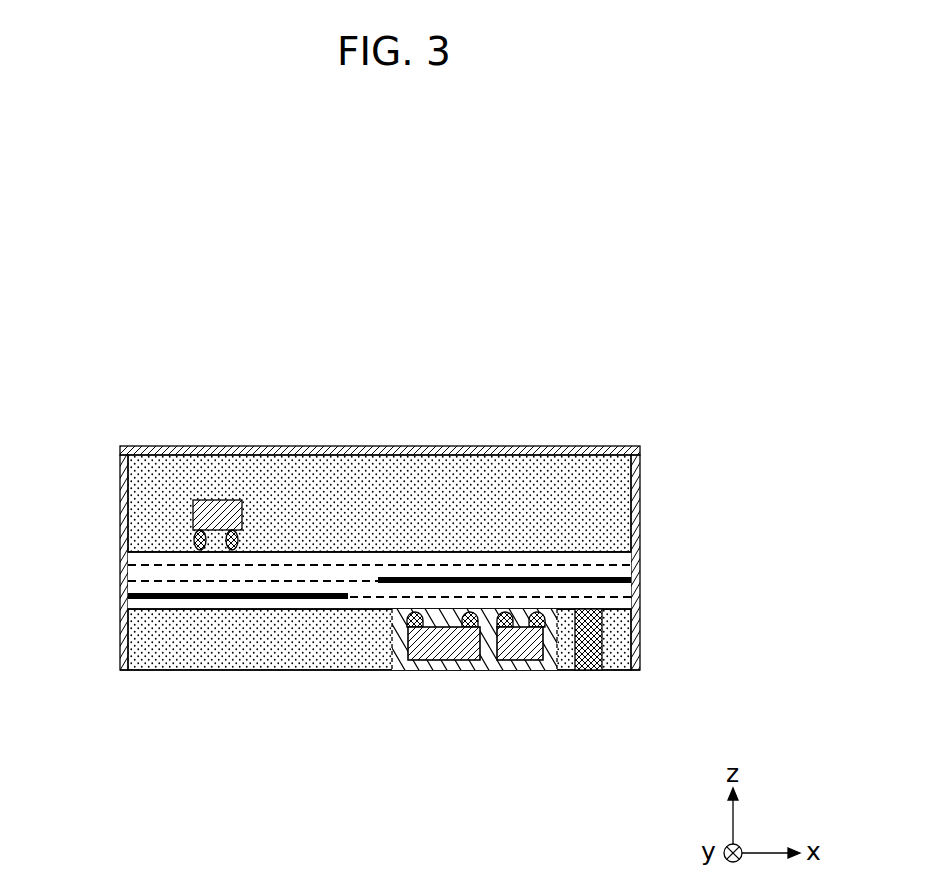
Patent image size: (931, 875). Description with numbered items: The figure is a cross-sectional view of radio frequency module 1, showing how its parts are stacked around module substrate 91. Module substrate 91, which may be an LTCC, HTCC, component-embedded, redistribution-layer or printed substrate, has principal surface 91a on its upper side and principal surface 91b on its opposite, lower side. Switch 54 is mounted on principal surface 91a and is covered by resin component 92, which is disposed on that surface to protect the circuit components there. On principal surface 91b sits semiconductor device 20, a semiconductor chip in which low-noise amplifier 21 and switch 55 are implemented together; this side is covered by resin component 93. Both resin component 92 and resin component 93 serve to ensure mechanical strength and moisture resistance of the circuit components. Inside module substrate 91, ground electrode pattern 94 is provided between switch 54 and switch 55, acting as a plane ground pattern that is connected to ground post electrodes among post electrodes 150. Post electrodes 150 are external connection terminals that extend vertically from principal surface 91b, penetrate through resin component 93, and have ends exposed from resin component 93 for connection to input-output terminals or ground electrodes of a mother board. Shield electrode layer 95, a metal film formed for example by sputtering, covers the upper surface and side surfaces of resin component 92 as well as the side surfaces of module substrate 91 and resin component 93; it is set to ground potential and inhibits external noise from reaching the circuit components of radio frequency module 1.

The radio frequency module 1 is at (586, 376).
The semiconductor device 20 is at (390, 637).
The low-noise amplifier 21 is at (450, 662).
The switch 54 is at (242, 513).
The switch 55 is at (517, 662).
The module substrate 91 is at (628, 572).
The principal surface 91a is at (615, 548).
The principal surface 91b is at (617, 615).
The resin component 92 is at (147, 507).
The resin component 93 is at (140, 642).
The ground electrode pattern 94 is at (447, 577).
The shield electrode layer 95 is at (370, 446).
The post electrodes 150 is at (597, 672).